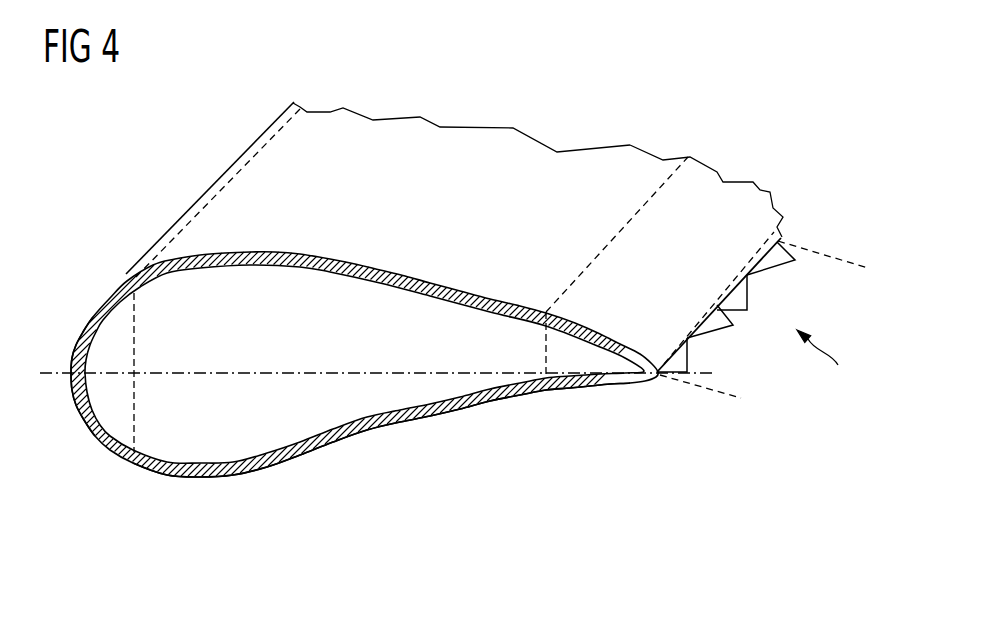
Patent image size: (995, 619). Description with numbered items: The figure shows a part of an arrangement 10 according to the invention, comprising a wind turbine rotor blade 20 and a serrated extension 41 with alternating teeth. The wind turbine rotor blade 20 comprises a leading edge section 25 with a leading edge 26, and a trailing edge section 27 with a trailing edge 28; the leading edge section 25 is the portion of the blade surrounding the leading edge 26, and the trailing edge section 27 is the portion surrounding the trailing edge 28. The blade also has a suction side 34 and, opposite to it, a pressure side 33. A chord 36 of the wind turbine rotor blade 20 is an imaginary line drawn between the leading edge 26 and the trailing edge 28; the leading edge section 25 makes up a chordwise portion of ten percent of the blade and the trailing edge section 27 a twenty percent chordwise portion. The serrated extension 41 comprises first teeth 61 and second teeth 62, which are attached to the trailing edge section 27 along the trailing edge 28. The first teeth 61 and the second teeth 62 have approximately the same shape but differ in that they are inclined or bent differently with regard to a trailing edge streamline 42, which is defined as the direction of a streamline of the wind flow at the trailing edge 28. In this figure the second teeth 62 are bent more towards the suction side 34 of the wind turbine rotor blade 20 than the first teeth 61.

The arrangement 10 is at (138, 170).
The wind turbine rotor blade 20 is at (297, 502).
The leading edge section 25 is at (237, 162).
The leading edge 26 is at (70, 375).
The trailing edge section 27 is at (747, 190).
The trailing edge 28 is at (725, 297).
The pressure side 33 is at (358, 402).
The suction side 34 is at (463, 182).
The chord 36 is at (707, 376).
The serrated extension 41 is at (830, 357).
The trailing edge streamline 42 is at (820, 255).
The first teeth 61 is at (798, 262).
The second teeth 62 is at (742, 292).